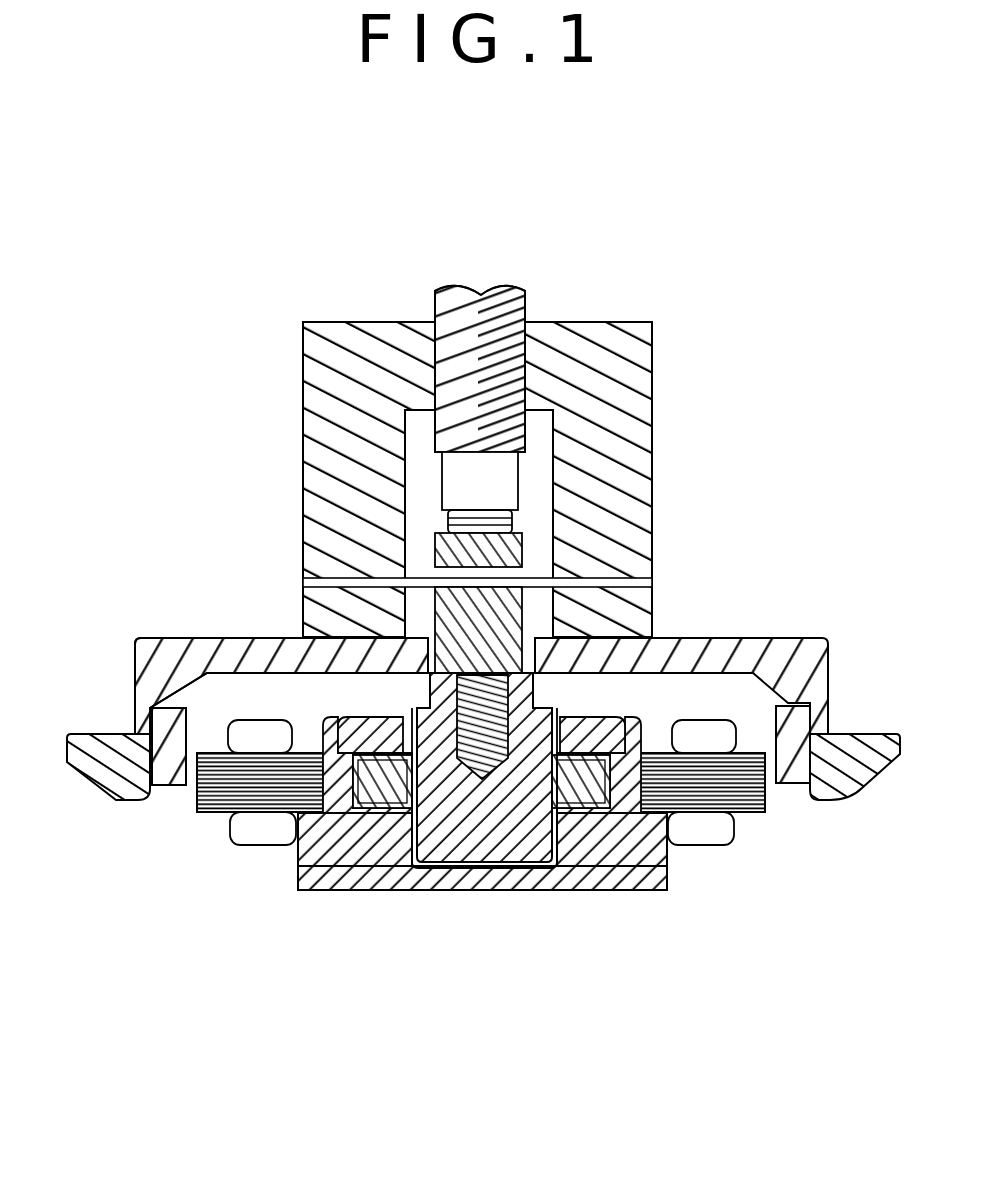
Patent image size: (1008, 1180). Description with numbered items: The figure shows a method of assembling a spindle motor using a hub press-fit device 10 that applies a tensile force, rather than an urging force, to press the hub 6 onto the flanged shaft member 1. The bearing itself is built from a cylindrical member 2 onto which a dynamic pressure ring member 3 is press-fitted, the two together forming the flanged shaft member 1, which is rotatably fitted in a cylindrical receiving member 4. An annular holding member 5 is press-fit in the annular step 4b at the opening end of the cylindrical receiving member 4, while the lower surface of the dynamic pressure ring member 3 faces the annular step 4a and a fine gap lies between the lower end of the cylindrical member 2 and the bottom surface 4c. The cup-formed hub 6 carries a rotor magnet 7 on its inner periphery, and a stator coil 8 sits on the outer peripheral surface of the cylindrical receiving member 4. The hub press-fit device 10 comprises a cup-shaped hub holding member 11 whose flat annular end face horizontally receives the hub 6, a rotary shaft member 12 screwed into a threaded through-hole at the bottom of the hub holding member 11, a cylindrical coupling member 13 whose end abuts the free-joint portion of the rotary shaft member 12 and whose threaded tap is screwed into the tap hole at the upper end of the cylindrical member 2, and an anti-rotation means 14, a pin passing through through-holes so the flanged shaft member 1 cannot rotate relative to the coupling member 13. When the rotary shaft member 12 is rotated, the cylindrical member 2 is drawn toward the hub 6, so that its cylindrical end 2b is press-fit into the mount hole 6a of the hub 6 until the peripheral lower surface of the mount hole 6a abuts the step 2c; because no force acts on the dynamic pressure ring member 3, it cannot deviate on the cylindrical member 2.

The flanged shaft member 1 is at (542, 893).
The cylindrical member 2 is at (437, 838).
The cylindrical end 2b is at (548, 700).
The step 2c is at (412, 708).
The dynamic pressure ring member 3 is at (357, 892).
The cylindrical receiving member 4 is at (512, 790).
The annular step 4a is at (624, 893).
The annular step 4b is at (660, 893).
The bottom surface 4c is at (492, 893).
The annular holding member 5 is at (612, 800).
The hub 6 is at (762, 640).
The mount hole 6a is at (330, 655).
The rotor magnet 7 is at (790, 753).
The stator coil 8 is at (713, 822).
The hub press-fit device 10 is at (280, 291).
The hub holding member 11 is at (607, 433).
The rotary shaft member 12 is at (549, 350).
The coupling member 13 is at (518, 628).
The anti-rotation means 14 is at (358, 575).